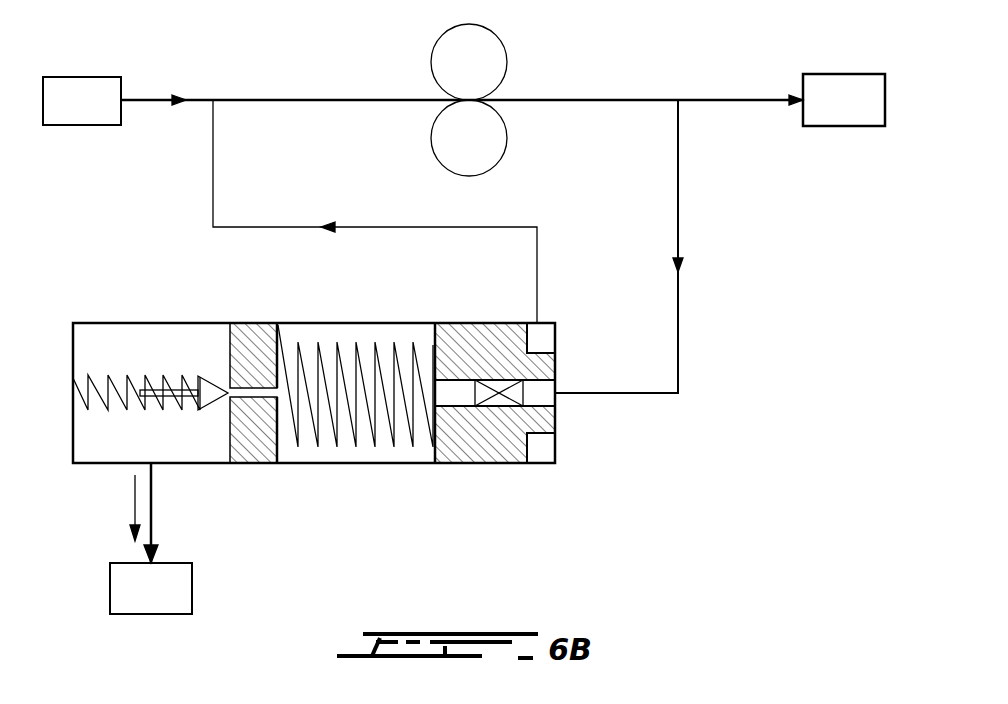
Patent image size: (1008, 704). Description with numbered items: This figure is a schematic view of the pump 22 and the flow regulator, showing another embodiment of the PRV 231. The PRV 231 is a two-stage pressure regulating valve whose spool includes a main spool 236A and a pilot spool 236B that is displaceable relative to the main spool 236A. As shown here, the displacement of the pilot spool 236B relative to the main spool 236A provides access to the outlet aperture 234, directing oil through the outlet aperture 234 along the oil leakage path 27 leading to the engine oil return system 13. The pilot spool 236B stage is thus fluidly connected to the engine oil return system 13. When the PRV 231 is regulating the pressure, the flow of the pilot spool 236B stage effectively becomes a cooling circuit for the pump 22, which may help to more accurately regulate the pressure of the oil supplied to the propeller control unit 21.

The engine oil return system 13 is at (117, 345).
The propeller control unit 21 is at (844, 100).
The pump 22 is at (507, 53).
The oil leakage path 27 is at (134, 499).
The PRV 231 is at (370, 488).
The outlet aperture 234 is at (153, 466).
The main spool 236A is at (487, 462).
The pilot spool 236B is at (252, 338).